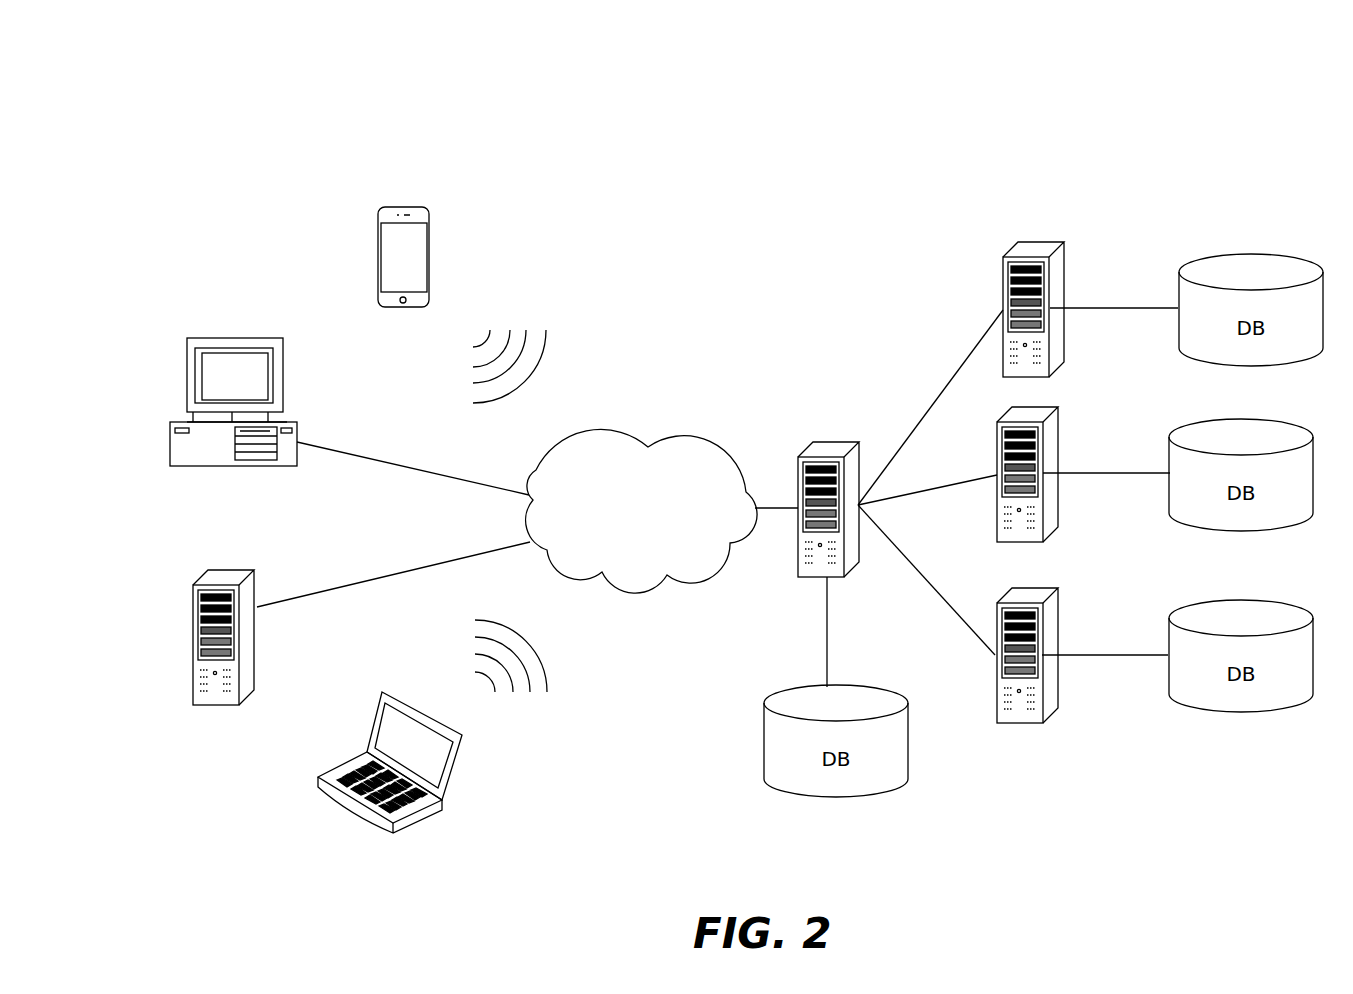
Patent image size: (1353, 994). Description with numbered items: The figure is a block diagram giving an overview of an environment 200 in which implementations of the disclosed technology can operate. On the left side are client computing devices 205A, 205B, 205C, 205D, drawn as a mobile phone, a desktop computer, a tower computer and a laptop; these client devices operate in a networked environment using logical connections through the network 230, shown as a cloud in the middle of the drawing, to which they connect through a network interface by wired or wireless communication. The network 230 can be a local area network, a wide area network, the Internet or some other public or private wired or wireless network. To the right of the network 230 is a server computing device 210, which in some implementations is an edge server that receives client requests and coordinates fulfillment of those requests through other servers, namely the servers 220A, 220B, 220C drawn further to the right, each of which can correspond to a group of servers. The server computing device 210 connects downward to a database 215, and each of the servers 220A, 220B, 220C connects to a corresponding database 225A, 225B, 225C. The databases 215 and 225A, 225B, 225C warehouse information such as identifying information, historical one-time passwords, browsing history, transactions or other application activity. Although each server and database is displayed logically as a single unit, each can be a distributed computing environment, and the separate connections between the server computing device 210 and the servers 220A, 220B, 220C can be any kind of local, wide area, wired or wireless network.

The environment 200 is at (1122, 123).
The client computing device 205A is at (420, 204).
The client computing device 205B is at (274, 338).
The client computing device 205C is at (248, 568).
The client computing device 205D is at (462, 767).
The network 230 is at (692, 433).
The server computing device 210 is at (840, 441).
The database 215 is at (887, 688).
The server 220A is at (1064, 237).
The server 220B is at (1058, 403).
The server 220C is at (1057, 584).
The database 225A is at (1247, 252).
The database 225B is at (1237, 418).
The database 225C is at (1236, 599).